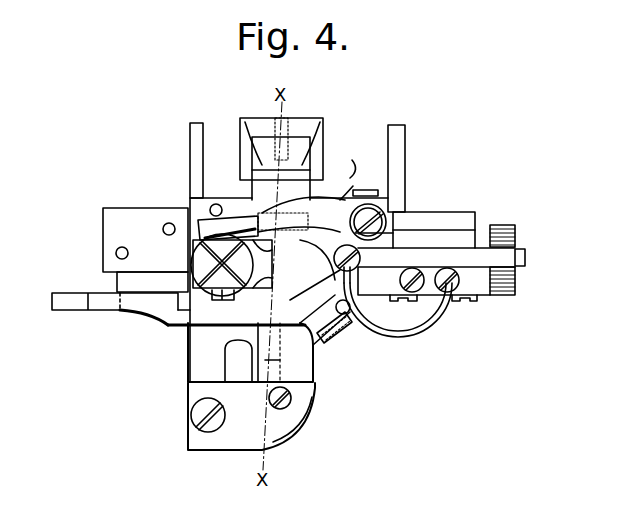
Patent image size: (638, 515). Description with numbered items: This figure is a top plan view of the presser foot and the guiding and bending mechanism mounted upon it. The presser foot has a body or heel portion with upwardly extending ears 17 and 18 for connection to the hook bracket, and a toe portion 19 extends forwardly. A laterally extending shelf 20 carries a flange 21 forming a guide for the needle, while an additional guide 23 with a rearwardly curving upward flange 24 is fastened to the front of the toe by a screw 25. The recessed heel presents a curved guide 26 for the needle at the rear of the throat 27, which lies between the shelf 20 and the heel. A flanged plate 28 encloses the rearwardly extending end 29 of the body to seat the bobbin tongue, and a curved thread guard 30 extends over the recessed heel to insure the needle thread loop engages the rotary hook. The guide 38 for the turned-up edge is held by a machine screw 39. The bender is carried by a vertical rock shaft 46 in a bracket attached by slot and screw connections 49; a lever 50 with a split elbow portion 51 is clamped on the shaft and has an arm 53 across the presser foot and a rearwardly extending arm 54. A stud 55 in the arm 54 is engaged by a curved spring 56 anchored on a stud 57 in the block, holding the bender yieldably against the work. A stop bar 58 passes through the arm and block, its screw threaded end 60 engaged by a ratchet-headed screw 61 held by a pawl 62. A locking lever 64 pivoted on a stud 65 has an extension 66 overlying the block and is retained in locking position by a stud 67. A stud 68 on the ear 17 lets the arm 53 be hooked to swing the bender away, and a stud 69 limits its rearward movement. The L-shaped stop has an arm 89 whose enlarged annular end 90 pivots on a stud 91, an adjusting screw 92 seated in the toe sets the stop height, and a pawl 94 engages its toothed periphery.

The ear 17 is at (137, 215).
The ear 18 is at (422, 212).
The toe portion 19 is at (193, 348).
The shelf 20 is at (316, 384).
The flange 21 is at (316, 364).
The additional guide 23 is at (243, 430).
The flange 24 is at (307, 418).
The screw 25 is at (202, 411).
The guide 26 is at (290, 190).
The throat 27 is at (233, 329).
The plate 28 is at (302, 135).
The rearwardly extending end 29 is at (303, 155).
The curved thread guard 30 is at (340, 205).
The guide 38 is at (313, 331).
The machine screw 39 is at (315, 263).
The vertical rock shaft 46 is at (351, 326).
The slot and screw connections 49 is at (477, 302).
The lever 50 is at (198, 352).
The split elbow portion 51 is at (350, 340).
The arm 53 is at (147, 320).
The rearwardly extending arm 54 is at (400, 255).
The stud 55 is at (398, 243).
The curved spring 56 is at (420, 328).
The stud 57 is at (447, 293).
The bar 58 is at (385, 267).
The screw threaded end 60 is at (527, 253).
The screw 61 is at (515, 228).
The pawl 62 is at (516, 274).
The locking lever 64 is at (242, 220).
The stud 65 is at (395, 210).
The extension 66 is at (352, 185).
The stud 67 is at (214, 204).
The stud 68 is at (117, 250).
The stud 69 is at (168, 224).
The arm 89 is at (185, 283).
The enlarged annular end 90 is at (123, 280).
The stud 91 is at (120, 313).
The adjusting screw 92 is at (224, 236).
The pawl 94 is at (192, 272).